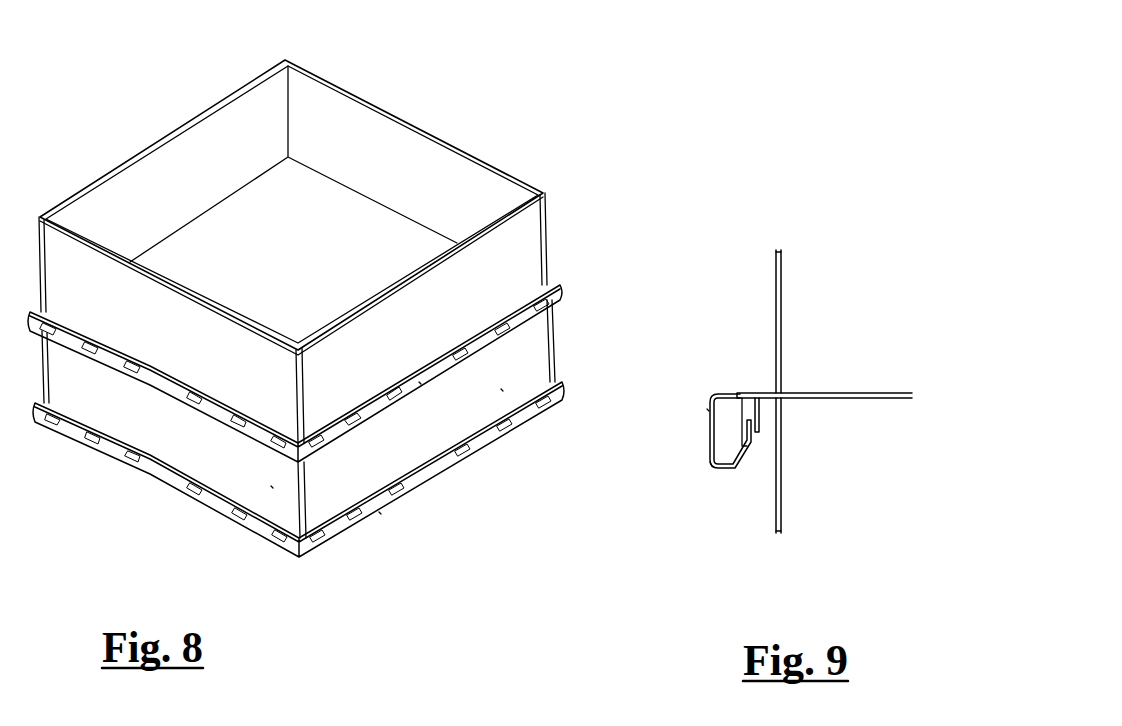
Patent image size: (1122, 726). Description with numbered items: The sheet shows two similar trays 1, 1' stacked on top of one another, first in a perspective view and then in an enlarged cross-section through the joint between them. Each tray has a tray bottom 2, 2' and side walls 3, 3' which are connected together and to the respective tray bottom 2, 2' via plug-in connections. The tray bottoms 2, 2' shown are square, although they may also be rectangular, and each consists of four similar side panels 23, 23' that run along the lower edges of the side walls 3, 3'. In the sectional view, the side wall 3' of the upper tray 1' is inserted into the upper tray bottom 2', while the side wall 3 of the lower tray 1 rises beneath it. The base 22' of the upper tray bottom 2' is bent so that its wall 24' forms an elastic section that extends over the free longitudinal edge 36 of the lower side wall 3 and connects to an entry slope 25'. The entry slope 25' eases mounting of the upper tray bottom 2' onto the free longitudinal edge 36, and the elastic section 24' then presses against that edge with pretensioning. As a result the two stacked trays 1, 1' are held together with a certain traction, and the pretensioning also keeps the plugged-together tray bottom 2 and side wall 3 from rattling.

In FIG. 8, the tray 1 is at (286, 419).
In FIG. 9, the tray 1 is at (819, 550).
In FIG. 8, the tray 1' is at (291, 188).
In FIG. 9, the tray 1' is at (834, 237).
In FIG. 8, the tray bottom 2 is at (412, 552).
In FIG. 8, the tray bottom 2' is at (479, 472).
In FIG. 9, the tray bottom 2' is at (669, 443).
In FIG. 8, the side wall 3 is at (425, 514).
In FIG. 9, the side wall 3 is at (822, 465).
In FIG. 8, the side wall 3' is at (321, 239).
In FIG. 9, the side wall 3' is at (734, 303).
In FIG. 9, the base 22' is at (688, 533).
In FIG. 8, the side panel 23 is at (298, 479).
In FIG. 8, the side panel 23' is at (335, 312).
In FIG. 9, the side panel 23' is at (651, 534).
In FIG. 9, the wall 24' is at (700, 389).
In FIG. 9, the entry slope 25' is at (739, 494).
In FIG. 9, the free longitudinal edge 36 is at (768, 398).